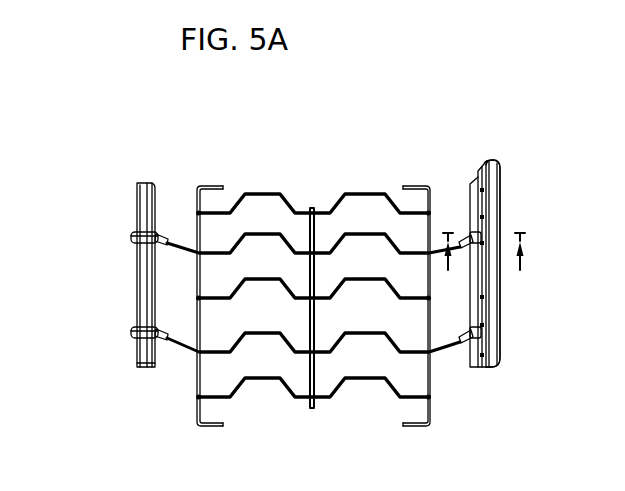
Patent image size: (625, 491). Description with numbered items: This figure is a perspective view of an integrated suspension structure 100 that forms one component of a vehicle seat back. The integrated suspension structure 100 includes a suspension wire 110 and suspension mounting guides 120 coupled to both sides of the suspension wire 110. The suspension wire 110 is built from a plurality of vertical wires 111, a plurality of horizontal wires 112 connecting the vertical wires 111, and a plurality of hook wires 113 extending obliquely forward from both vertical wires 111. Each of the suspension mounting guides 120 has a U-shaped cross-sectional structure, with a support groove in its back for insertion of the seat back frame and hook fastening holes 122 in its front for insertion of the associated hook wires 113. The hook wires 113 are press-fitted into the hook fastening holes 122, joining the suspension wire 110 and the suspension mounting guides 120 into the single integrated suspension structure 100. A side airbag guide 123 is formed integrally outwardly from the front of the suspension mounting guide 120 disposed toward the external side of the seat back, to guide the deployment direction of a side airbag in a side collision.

The integrated suspension structure 100 is at (444, 160).
The suspension wire 110 is at (363, 186).
The vertical wires 111 is at (197, 225).
The horizontal wires 112 is at (258, 192).
The hook wires 113 is at (175, 345).
The suspension mounting guides 120 is at (145, 278).
The hook fastening holes 122 is at (143, 232).
The side airbag guide 123 is at (498, 216).